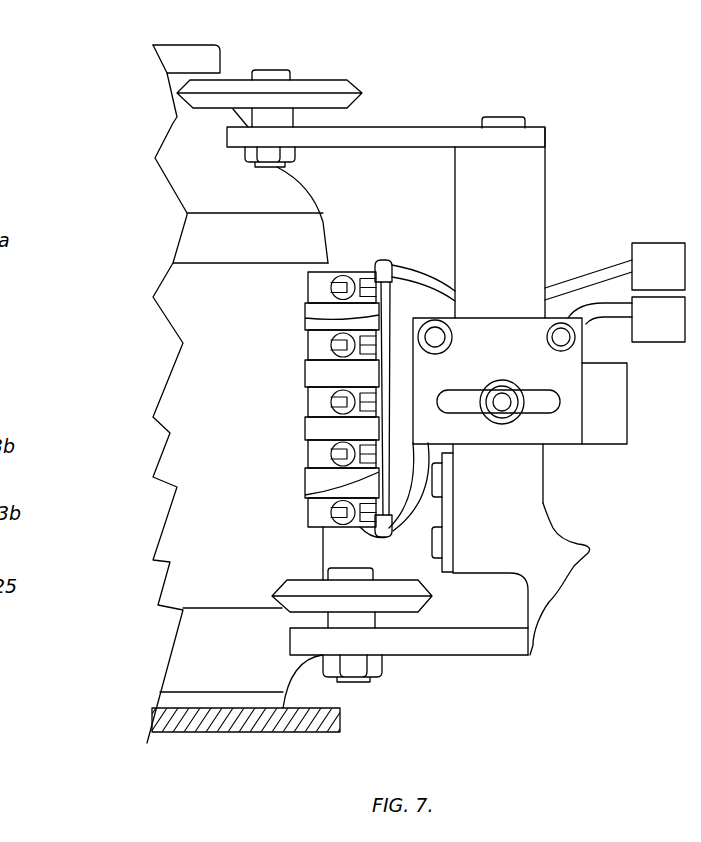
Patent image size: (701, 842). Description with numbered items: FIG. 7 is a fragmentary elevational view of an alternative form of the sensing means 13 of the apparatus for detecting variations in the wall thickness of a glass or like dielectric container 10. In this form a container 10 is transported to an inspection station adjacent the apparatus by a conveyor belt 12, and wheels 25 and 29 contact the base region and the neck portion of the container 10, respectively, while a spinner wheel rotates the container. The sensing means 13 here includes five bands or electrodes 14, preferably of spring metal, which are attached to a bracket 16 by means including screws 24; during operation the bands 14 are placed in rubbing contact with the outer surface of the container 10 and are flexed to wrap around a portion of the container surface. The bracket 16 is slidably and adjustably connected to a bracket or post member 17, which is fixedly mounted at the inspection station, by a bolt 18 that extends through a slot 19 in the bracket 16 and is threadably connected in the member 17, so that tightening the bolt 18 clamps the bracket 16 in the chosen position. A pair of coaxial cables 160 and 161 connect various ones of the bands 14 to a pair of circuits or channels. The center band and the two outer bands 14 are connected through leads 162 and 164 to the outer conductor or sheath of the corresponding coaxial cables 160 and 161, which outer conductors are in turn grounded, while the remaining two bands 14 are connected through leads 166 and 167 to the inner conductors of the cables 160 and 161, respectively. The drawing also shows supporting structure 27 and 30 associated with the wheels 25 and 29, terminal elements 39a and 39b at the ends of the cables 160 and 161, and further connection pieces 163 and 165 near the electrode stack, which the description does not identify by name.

The container 10 is at (307, 188).
The conveyor belt 12 is at (258, 733).
The sensing means 13 is at (372, 244).
The electrodes 14 is at (318, 288).
The bracket 16 is at (558, 434).
The bracket or post member 17 is at (547, 187).
The bolt 18 is at (498, 398).
The slot 19 is at (462, 372).
The screws 24 is at (348, 277).
The wheel 25 is at (420, 605).
The lower nut 27 is at (388, 662).
The wheel 29 is at (312, 92).
The bracket plate 30 is at (390, 127).
The terminal 39a is at (683, 215).
The terminal 39b is at (670, 343).
The coaxial cable 160 is at (575, 280).
The coaxial cable 161 is at (603, 324).
The lead 162 is at (398, 313).
The wire 163 is at (405, 445).
The lead 164 is at (372, 262).
The pin 165 is at (368, 532).
The lead 166 is at (308, 318).
The lead 167 is at (308, 485).